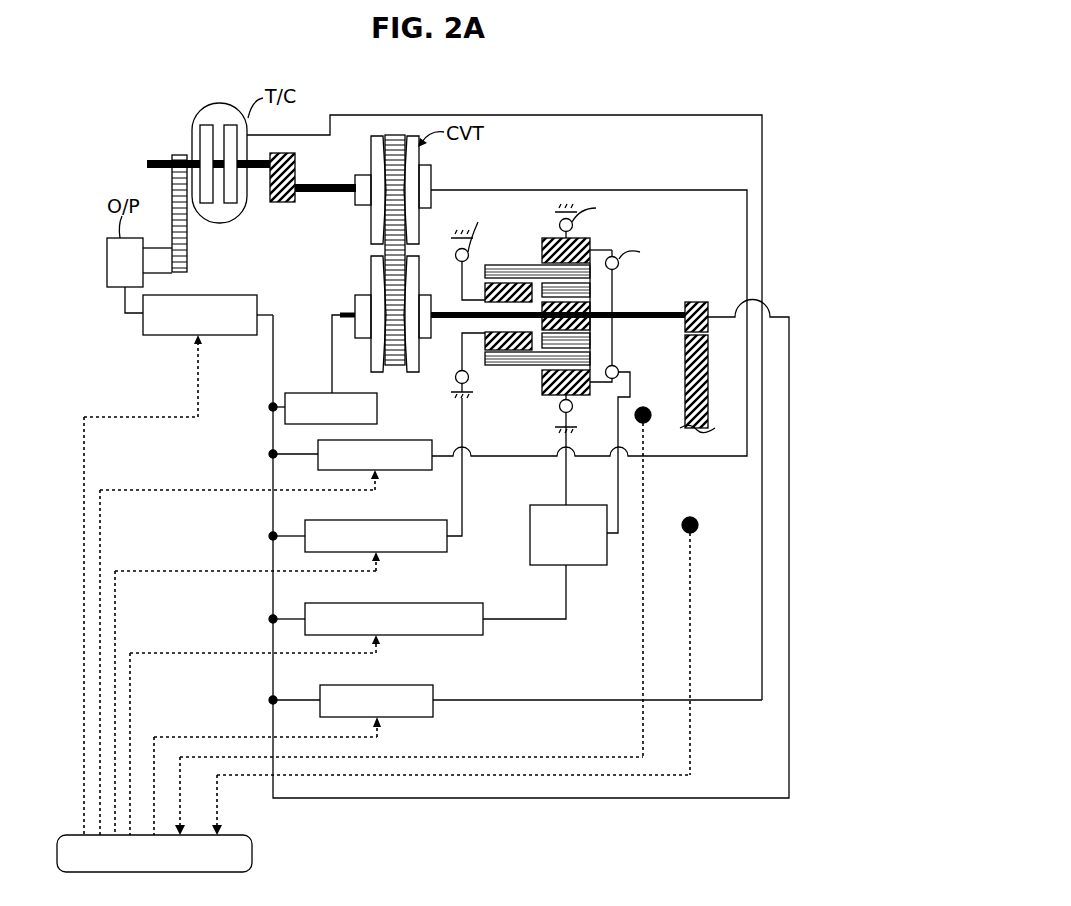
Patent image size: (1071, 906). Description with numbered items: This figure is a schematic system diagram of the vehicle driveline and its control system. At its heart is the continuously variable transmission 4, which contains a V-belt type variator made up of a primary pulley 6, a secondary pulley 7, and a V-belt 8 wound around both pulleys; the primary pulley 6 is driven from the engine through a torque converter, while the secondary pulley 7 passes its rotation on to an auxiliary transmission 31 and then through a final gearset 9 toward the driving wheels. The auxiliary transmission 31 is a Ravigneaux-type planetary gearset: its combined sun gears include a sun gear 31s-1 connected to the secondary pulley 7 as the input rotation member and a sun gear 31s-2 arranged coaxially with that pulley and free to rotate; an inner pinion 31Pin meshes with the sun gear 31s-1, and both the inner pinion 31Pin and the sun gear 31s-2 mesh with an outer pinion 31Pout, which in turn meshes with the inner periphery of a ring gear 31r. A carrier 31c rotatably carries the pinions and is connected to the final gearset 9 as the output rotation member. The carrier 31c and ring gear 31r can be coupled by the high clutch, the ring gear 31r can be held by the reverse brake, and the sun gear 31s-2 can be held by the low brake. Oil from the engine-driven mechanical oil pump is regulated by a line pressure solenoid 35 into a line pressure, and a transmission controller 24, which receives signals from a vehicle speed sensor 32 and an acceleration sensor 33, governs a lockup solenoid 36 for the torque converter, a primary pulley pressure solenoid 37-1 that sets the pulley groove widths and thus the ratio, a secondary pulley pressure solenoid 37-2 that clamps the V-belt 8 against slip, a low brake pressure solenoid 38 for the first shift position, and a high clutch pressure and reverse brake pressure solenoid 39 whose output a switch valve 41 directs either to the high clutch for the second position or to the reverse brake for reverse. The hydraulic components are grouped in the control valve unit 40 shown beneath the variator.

The continuously variable transmission 4 is at (680, 98).
The primary pulley 6 is at (431, 167).
The secondary pulley 7 is at (353, 305).
The V-belt 8 is at (385, 248).
The final gearset 9 is at (708, 320).
The transmission controller 24 is at (252, 856).
The auxiliary transmission 31 is at (516, 256).
The ring gear 31r is at (590, 240).
The inner pinion 31Pin is at (590, 290).
The sun gear 31s-1 is at (590, 312).
The carrier 31c is at (590, 340).
The sun gear 31s-2 is at (485, 338).
The outer pinion 31Pout is at (505, 367).
The vehicle speed sensor 32 is at (646, 407).
The acceleration sensor 33 is at (697, 517).
The line pressure solenoid 35 is at (210, 295).
The lockup solenoid 36 is at (420, 685).
The primary pulley pressure solenoid 37-1 is at (386, 440).
The secondary pulley pressure solenoid 37-2 is at (298, 393).
The low brake pressure solenoid 38 is at (410, 520).
The high clutch pressure and reverse brake pressure solenoid 39 is at (465, 603).
The control valve unit 40 is at (726, 798).
The switch valve 41 is at (535, 505).